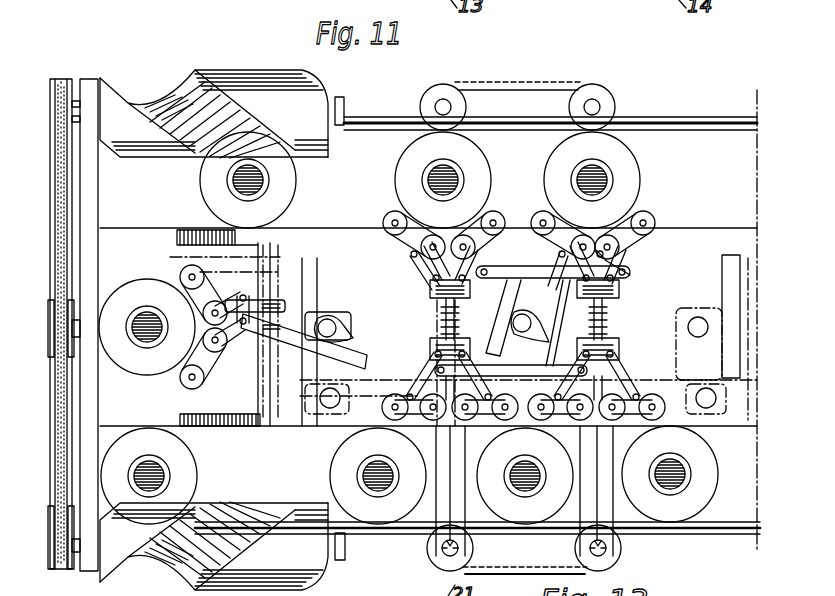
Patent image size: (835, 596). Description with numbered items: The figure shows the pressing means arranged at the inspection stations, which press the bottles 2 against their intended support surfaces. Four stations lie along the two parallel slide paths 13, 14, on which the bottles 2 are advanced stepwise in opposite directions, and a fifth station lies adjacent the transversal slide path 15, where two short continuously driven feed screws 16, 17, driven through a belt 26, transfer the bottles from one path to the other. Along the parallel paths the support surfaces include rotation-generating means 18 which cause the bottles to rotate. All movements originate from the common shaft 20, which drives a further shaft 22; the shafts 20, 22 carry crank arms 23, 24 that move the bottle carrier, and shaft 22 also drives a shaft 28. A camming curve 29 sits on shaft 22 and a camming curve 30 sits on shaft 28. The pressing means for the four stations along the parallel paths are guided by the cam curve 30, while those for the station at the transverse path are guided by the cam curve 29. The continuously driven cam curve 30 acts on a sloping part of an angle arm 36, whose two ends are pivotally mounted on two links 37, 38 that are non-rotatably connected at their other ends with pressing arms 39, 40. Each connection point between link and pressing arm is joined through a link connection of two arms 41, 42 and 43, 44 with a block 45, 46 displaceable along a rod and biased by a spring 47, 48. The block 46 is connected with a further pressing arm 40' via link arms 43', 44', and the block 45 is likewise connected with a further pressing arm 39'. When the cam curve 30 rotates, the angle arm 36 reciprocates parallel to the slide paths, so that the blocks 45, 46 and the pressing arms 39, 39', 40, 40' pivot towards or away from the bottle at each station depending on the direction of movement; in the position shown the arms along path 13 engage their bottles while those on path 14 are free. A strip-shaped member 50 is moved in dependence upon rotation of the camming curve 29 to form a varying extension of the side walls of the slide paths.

The bottles 2 is at (606, 144).
The parallel slide path 13 is at (738, 137).
The parallel slide path 14 is at (622, 515).
The transversal slide path 15 is at (104, 414).
The feed screw 16 is at (232, 72).
The feed screw 17 is at (214, 560).
The rotation-generating means 18 is at (428, 91).
The common shaft 20 is at (694, 317).
The shaft 22 is at (328, 318).
The crank arm 23 is at (686, 366).
The crank arm 24 is at (362, 370).
The belt 26 is at (58, 241).
The shaft 28 is at (516, 320).
The camming curve 29 is at (350, 327).
The camming curve 30 is at (548, 341).
The angle arm 36 is at (527, 282).
The link 37 is at (483, 271).
The link 38 is at (627, 277).
The pressing arm 39 is at (490, 203).
The pressing arm 39' is at (397, 229).
The pressing arm 40 is at (654, 226).
The pressing arm 40' is at (551, 222).
The arm 41 is at (410, 256).
The arm 42 is at (430, 272).
The arm 43 is at (630, 255).
The link arm 43' is at (569, 244).
The arm 44 is at (640, 265).
The link arm 44' is at (606, 228).
The block 45 is at (432, 293).
The block 46 is at (605, 292).
The spring 47 is at (440, 320).
The spring 48 is at (605, 318).
The strip-shaped member 50 is at (189, 229).